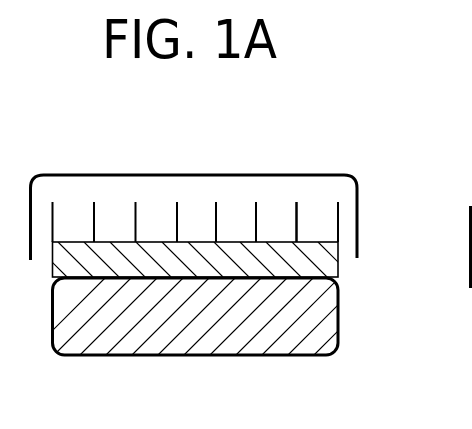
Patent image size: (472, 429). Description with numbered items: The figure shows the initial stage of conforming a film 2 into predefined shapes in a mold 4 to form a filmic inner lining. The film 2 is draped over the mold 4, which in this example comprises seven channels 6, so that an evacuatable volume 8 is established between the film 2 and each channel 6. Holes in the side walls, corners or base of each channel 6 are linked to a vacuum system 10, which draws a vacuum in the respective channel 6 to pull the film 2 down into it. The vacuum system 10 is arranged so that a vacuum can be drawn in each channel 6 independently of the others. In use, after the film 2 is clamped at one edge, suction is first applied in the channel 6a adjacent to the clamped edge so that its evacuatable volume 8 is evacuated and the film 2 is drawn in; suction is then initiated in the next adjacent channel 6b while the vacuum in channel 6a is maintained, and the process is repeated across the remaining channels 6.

The film 2 is at (359, 197).
The mold 4 is at (342, 262).
The channels 6 is at (73, 209).
The channel adjacent to the clamped edge 6a is at (316, 217).
The next adjacent channel 6b is at (276, 217).
The evacuatable volume 8 is at (186, 214).
The vacuum system 10 is at (176, 356).